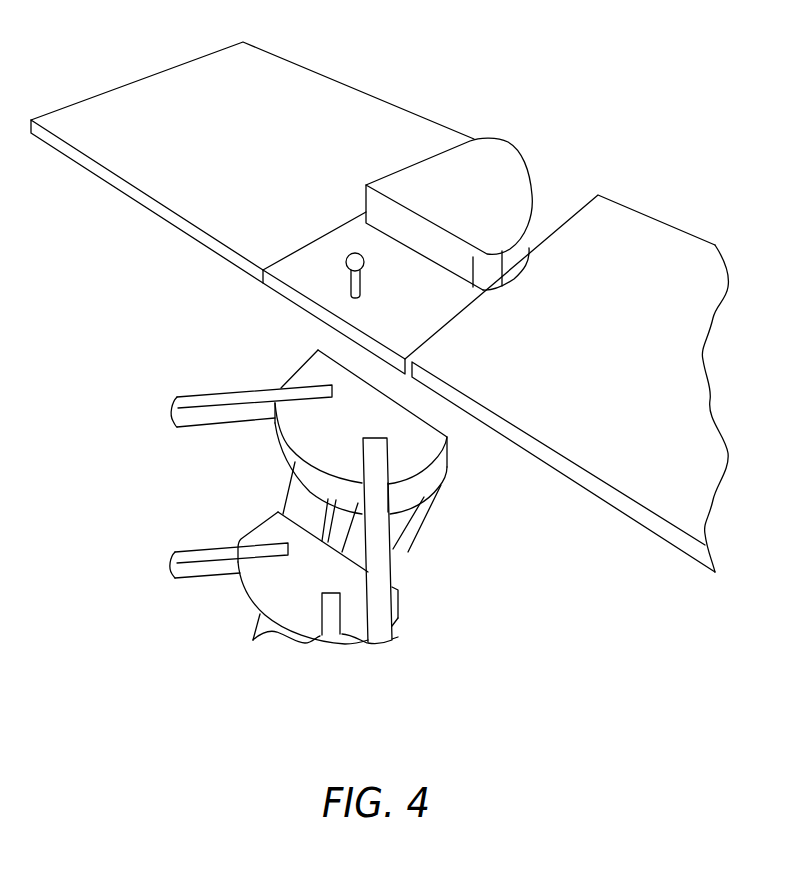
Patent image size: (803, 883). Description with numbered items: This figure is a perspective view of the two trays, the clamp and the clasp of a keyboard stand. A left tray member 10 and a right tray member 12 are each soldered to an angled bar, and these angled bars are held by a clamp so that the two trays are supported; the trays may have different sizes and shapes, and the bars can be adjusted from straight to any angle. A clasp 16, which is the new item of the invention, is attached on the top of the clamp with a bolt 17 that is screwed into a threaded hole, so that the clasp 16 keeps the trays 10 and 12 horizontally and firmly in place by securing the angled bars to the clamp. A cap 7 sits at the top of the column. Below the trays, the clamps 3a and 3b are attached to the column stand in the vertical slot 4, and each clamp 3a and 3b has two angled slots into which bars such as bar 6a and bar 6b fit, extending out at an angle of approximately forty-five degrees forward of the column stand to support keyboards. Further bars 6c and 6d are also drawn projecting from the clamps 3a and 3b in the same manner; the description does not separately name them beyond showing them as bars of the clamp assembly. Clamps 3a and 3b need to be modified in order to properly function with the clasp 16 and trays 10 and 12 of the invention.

The left tray member 10 is at (143, 97).
The cap 7 is at (507, 163).
The right tray member 12 is at (672, 252).
The clasp 16 is at (287, 272).
The bolt 17 is at (347, 282).
The bar 6c is at (190, 400).
The clamp 3b is at (318, 418).
The vertical slot 4 is at (292, 517).
The vertical bar 6d is at (378, 572).
The clamp 3a is at (272, 587).
The bar 6a is at (192, 556).
The bar 6b is at (335, 622).